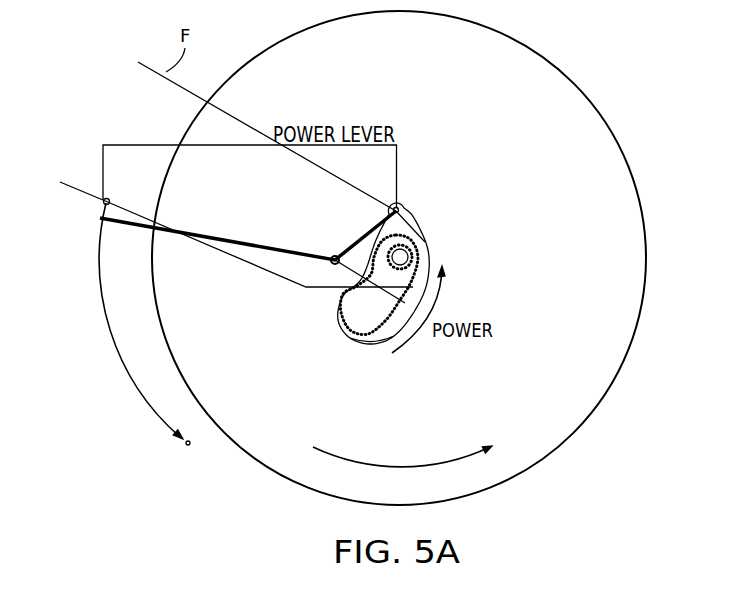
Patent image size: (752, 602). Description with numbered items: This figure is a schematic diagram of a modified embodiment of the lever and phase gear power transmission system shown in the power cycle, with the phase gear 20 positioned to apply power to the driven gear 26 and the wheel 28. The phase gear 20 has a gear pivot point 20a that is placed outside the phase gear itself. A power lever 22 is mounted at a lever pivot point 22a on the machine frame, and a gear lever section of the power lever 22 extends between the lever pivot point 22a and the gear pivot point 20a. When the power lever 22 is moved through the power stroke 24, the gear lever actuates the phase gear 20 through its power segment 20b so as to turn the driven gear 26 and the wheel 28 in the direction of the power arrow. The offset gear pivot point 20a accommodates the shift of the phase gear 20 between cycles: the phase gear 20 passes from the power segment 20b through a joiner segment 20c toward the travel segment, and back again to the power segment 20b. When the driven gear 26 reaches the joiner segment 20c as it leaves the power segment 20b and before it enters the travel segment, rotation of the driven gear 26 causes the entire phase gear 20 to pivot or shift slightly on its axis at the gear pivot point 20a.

The phase gear 20 is at (342, 334).
The gear pivot point 20a is at (403, 203).
The power segment 20b is at (372, 338).
The joiner segment 20c is at (337, 289).
The power lever 22 is at (200, 243).
The lever pivot point 22a is at (333, 258).
The power stroke 24 is at (133, 383).
The driven gear 26 is at (404, 251).
The wheel 28 is at (604, 396).